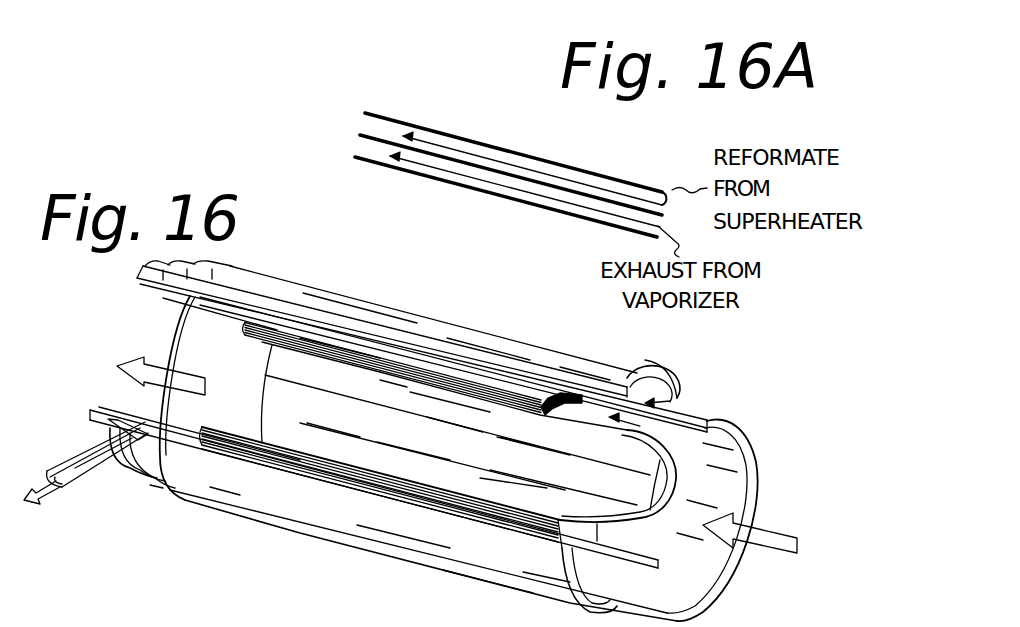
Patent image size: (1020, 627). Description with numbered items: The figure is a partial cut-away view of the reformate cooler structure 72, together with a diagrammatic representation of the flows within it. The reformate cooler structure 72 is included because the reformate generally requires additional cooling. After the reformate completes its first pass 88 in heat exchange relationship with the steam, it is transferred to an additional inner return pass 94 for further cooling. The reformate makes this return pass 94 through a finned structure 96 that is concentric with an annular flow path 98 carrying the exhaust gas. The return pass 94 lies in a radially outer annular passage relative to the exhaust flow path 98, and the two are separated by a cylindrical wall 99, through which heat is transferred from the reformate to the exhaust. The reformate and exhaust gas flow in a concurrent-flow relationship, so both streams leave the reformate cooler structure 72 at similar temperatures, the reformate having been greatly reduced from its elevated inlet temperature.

In FIG. 16A, the first pass 88 is at (660, 181).
In FIG. 16A, the return pass 94 is at (553, 177).
In FIG. 16, the return pass 94 is at (578, 391).
In FIG. 16, the finned structure 96 is at (478, 350).
In FIG. 16A, the annular flow path 98 is at (550, 177).
In FIG. 16, the annular flow path 98 is at (688, 405).
In FIG. 16A, the cylindrical wall 99 is at (370, 141).
In FIG. 16, the cylindrical wall 99 is at (707, 420).
In FIG. 16, the reformate cooler structure 72 is at (376, 485).